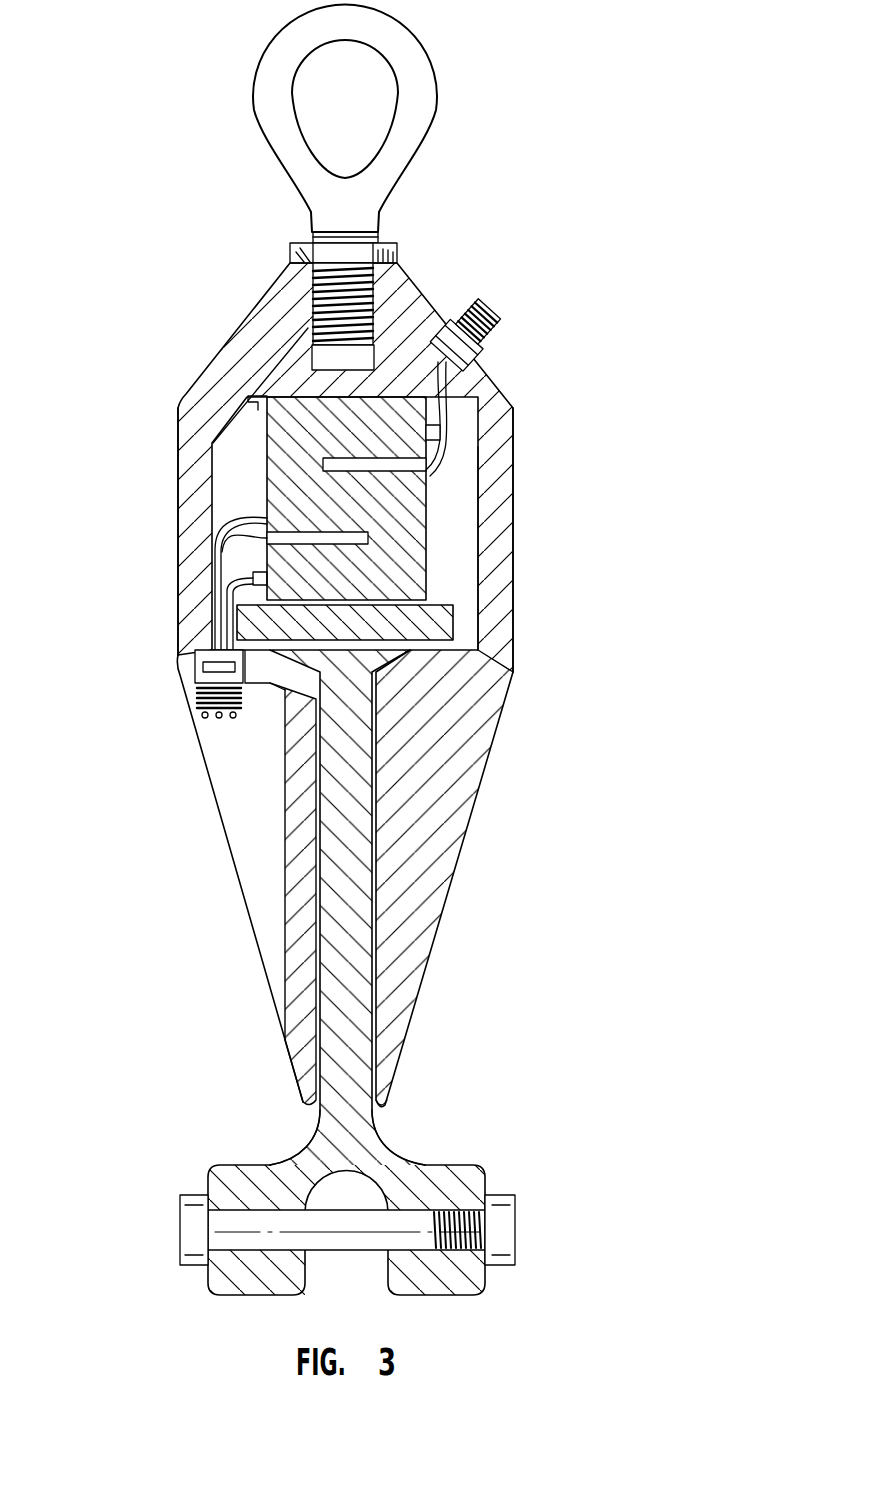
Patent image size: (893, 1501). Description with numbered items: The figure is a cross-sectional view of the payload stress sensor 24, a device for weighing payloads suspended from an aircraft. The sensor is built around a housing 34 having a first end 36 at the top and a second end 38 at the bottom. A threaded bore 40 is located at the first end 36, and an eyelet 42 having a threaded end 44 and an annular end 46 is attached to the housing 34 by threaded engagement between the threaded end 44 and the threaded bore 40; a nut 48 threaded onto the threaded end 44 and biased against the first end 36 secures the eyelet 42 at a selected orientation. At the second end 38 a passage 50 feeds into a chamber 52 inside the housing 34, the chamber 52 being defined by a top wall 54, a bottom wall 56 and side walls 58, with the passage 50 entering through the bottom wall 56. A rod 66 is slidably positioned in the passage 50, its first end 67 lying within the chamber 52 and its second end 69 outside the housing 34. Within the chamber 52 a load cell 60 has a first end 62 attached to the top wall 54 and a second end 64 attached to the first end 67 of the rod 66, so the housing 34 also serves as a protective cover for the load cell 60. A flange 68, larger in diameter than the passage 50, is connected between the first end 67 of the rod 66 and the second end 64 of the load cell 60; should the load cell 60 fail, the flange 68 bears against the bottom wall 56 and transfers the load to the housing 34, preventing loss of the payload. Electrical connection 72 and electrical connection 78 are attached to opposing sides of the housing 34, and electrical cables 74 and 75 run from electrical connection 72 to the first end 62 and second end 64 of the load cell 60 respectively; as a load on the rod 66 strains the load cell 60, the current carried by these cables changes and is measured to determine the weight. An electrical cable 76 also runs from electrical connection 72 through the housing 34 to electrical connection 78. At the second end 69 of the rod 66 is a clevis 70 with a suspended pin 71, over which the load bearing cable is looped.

The payload stress sensor 24 is at (467, 727).
The housing 34 is at (497, 598).
The first end 36 is at (420, 310).
The second end 38 is at (390, 1092).
The threaded bore 40 is at (295, 311).
The eyelet 42 is at (380, 192).
The threaded end 44 is at (420, 258).
The annular end 46 is at (425, 87).
The nut 48 is at (293, 233).
The passage 50 is at (380, 868).
The chamber 52 is at (455, 512).
The top wall 54 is at (287, 392).
The bottom wall 56 is at (458, 637).
The side walls 58 is at (207, 497).
The load cell 60 is at (277, 458).
The first end 62 is at (287, 424).
The second end 64 is at (250, 622).
The rod 66 is at (350, 1022).
The first end 67 is at (288, 774).
The flange 68 is at (220, 630).
The second end 69 is at (357, 1150).
The clevis 70 is at (472, 1190).
The pin 71 is at (340, 1243).
The electrical connection 72 is at (497, 360).
The electrical cable 74 is at (453, 407).
The electrical cable 75 is at (258, 520).
The electrical cable 76 is at (223, 592).
The electrical connection 78 is at (207, 697).